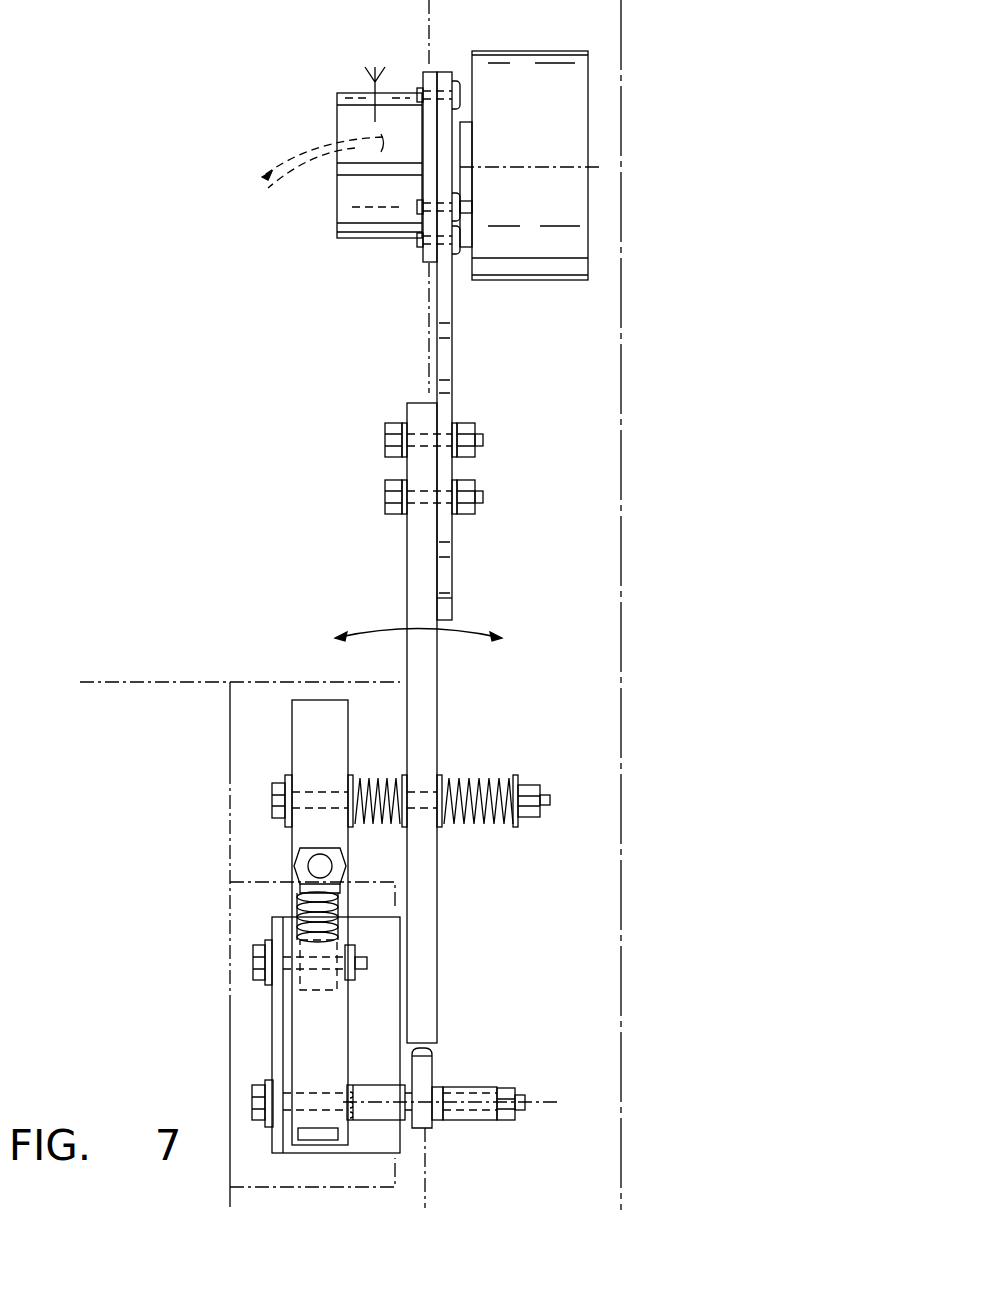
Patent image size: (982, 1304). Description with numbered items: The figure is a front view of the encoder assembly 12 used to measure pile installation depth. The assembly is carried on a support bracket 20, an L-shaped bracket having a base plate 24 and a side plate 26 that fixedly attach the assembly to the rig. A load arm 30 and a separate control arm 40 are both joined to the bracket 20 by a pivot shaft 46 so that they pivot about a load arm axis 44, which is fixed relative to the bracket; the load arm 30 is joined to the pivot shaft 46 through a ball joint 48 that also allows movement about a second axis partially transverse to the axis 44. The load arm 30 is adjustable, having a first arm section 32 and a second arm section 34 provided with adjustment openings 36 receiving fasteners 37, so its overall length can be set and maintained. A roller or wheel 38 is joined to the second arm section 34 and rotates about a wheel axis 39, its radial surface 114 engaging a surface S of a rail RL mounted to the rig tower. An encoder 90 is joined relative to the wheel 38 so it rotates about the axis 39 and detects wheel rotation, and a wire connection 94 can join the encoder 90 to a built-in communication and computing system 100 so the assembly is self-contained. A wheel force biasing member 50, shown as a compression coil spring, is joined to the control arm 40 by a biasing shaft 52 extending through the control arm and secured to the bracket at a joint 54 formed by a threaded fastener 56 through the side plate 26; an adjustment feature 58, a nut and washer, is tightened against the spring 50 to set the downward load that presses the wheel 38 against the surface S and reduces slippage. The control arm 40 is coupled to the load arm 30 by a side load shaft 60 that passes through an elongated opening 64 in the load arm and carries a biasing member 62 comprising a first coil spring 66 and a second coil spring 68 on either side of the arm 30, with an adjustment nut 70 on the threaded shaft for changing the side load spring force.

The encoder assembly 12 is at (158, 297).
The support bracket 20 is at (399, 1007).
The base plate 24 is at (390, 985).
The side plate 26 is at (275, 1040).
The load arm 30 is at (467, 533).
The first arm section 32 is at (430, 690).
The second arm section 34 is at (449, 308).
The adjustment openings 36 is at (449, 385).
The fasteners 37 is at (483, 497).
The roller or wheel 38 is at (583, 202).
The wheel axis 39 is at (603, 166).
The control arm 40 is at (308, 742).
The load arm axis 44 is at (557, 1102).
The pivot shaft 46 is at (373, 1118).
The ball joint 48 is at (425, 1130).
The wheel force biasing member 50 is at (235, 897).
The biasing shaft 52 is at (305, 862).
The joint 54 is at (317, 987).
The threaded fastener 56 is at (367, 960).
The adjustment feature 58 is at (300, 893).
The side load shaft 60 is at (487, 837).
The biasing member 62 is at (471, 778).
The opening 64 is at (412, 818).
The first coil spring 66 is at (382, 780).
The second coil spring 68 is at (488, 785).
The adjustment nut 70 is at (530, 820).
The encoder 90 is at (363, 230).
The wire connection 94 is at (285, 158).
The built-in communication and/or computing system 100 is at (348, 122).
The radial surface 114 is at (577, 118).
The surface S is at (607, 354).
The rail RL is at (621, 493).